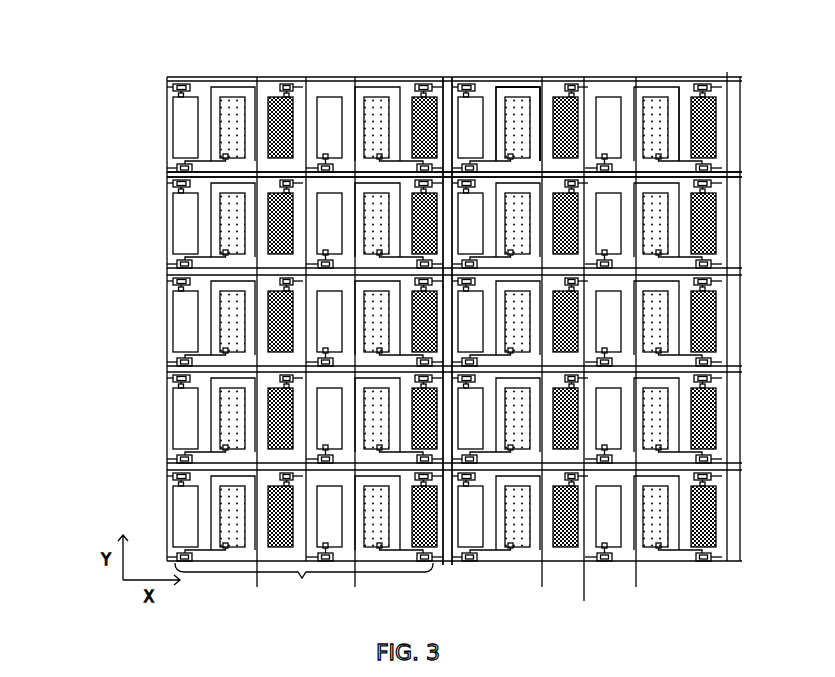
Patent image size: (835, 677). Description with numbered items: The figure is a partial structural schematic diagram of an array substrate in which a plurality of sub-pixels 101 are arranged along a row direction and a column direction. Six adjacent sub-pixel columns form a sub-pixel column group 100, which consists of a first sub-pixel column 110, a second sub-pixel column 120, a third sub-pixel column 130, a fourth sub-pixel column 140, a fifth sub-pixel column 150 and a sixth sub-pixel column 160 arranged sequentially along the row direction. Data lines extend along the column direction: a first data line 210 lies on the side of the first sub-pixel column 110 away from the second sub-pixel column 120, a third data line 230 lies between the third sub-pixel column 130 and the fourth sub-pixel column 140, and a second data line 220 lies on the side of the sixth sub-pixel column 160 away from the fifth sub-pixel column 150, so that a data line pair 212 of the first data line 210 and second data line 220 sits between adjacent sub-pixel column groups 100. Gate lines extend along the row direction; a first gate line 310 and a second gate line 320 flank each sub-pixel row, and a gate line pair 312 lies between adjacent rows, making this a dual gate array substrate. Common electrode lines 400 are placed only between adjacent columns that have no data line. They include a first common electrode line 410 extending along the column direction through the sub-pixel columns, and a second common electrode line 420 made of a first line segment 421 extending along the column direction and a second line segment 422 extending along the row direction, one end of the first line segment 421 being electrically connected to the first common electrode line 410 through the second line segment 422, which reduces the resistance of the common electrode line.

The sub-pixel column group 100 is at (304, 582).
The sub-pixel 101 is at (180, 340).
The first sub-pixel column 110 is at (172, 103).
The second sub-pixel column 120 is at (235, 107).
The third sub-pixel column 130 is at (273, 102).
The fourth sub-pixel column 140 is at (322, 108).
The fifth sub-pixel column 150 is at (372, 100).
The sixth sub-pixel column 160 is at (425, 120).
The first data line 210 is at (167, 130).
The data line pair 212 is at (493, 598).
The second data line 220 is at (443, 563).
The third data line 230 is at (584, 601).
The first gate line 310 is at (153, 81).
The gate line pair 312 is at (97, 160).
The second gate line 320 is at (157, 172).
The common electrode line 400 is at (617, 27).
The first common electrode line 410 is at (538, 102).
The second common electrode line 420 is at (517, 88).
The first line segment 421 is at (730, 72).
The second line segment 422 is at (679, 110).